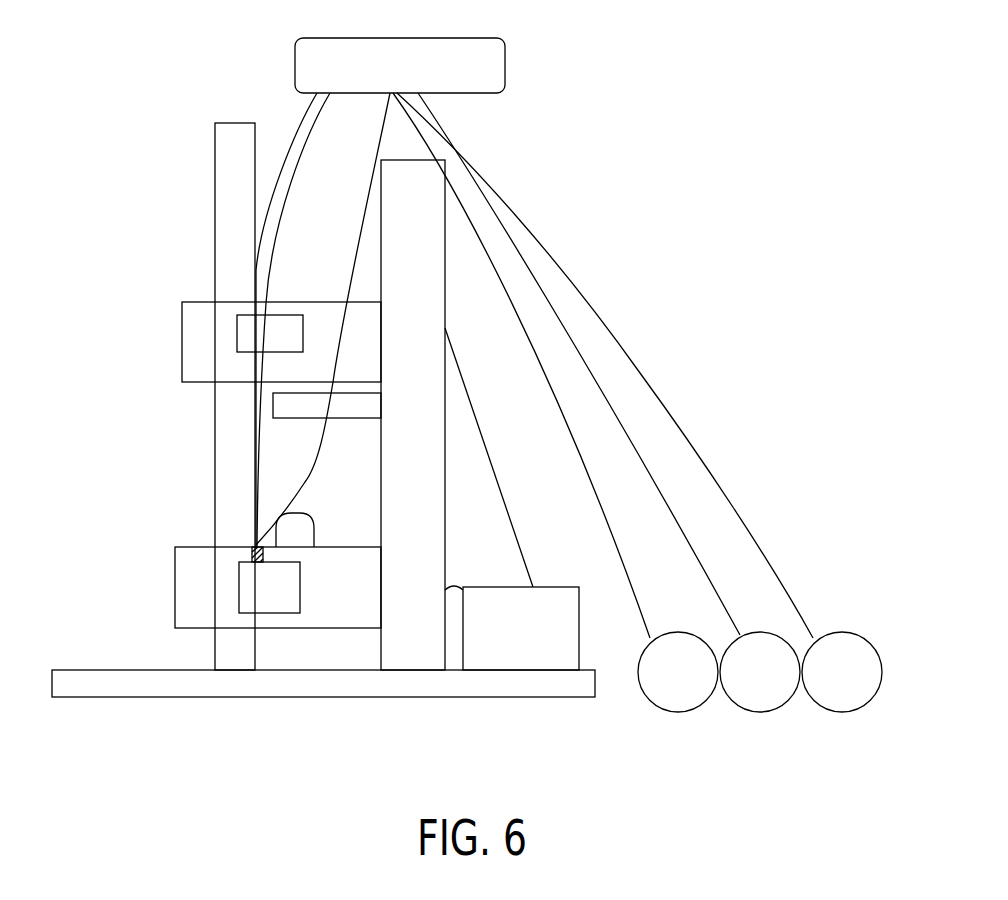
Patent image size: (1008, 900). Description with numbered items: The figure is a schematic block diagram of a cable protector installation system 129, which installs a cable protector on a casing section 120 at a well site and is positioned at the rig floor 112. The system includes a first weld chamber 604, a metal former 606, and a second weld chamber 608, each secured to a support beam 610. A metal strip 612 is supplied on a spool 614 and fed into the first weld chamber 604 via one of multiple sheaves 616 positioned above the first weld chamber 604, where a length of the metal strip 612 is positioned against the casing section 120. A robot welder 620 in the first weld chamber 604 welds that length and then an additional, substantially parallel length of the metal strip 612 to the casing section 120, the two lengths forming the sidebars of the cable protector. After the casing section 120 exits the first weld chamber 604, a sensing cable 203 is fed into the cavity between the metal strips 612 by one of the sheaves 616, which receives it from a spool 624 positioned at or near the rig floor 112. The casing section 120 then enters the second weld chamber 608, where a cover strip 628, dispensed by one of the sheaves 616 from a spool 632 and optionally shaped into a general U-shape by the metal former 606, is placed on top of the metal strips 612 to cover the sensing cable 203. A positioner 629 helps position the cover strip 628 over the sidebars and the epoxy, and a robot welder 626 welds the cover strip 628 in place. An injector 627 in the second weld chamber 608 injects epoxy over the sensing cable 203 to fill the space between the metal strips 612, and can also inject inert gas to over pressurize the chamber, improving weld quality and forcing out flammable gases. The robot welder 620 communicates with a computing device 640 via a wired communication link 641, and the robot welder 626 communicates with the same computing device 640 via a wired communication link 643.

The rig floor 112 is at (70, 670).
The casing section 120 is at (225, 163).
The cable protector installation system 129 is at (608, 138).
The sensing cable 203 is at (257, 422).
The first weld chamber 604 is at (193, 343).
The metal former 606 is at (285, 397).
The second weld chamber 608 is at (182, 593).
The support beam 610 is at (427, 292).
The metal strip 612 is at (257, 258).
The spool 614 is at (842, 697).
The sheaves 616 is at (492, 62).
The robot welder 620 is at (257, 337).
The spool of sensing cable 624 is at (763, 697).
The robot welder 626 is at (262, 600).
The injector 627 is at (288, 535).
The cover strip 628 is at (305, 482).
The positioner 629 is at (255, 555).
The spool 632 is at (678, 697).
The computing device 640 is at (543, 637).
The wired communication link 641 is at (487, 444).
The wired communication link 643 is at (452, 600).